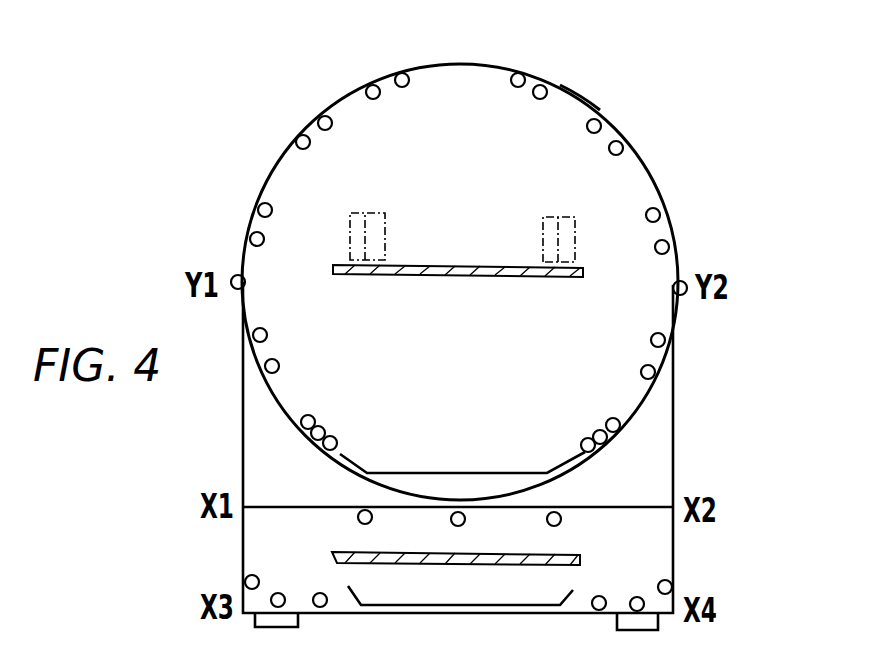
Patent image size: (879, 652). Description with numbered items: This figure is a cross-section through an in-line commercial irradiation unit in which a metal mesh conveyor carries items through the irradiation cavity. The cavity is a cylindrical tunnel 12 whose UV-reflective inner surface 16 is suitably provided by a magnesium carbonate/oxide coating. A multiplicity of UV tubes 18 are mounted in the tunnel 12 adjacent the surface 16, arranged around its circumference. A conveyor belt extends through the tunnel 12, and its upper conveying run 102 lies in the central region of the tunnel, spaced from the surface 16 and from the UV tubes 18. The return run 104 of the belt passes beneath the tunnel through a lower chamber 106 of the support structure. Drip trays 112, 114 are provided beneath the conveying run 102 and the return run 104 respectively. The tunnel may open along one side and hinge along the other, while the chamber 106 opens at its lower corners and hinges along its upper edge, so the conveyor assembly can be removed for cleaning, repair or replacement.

The cylindrical tunnel 12 is at (645, 167).
The UV-reflective inner surface 16 is at (580, 118).
The UV tubes 18 is at (535, 98).
The conveying run 102 is at (450, 265).
The return run 104 is at (580, 555).
The lower chamber 106 is at (665, 552).
The drip tray 112 is at (452, 472).
The drip tray 114 is at (350, 586).